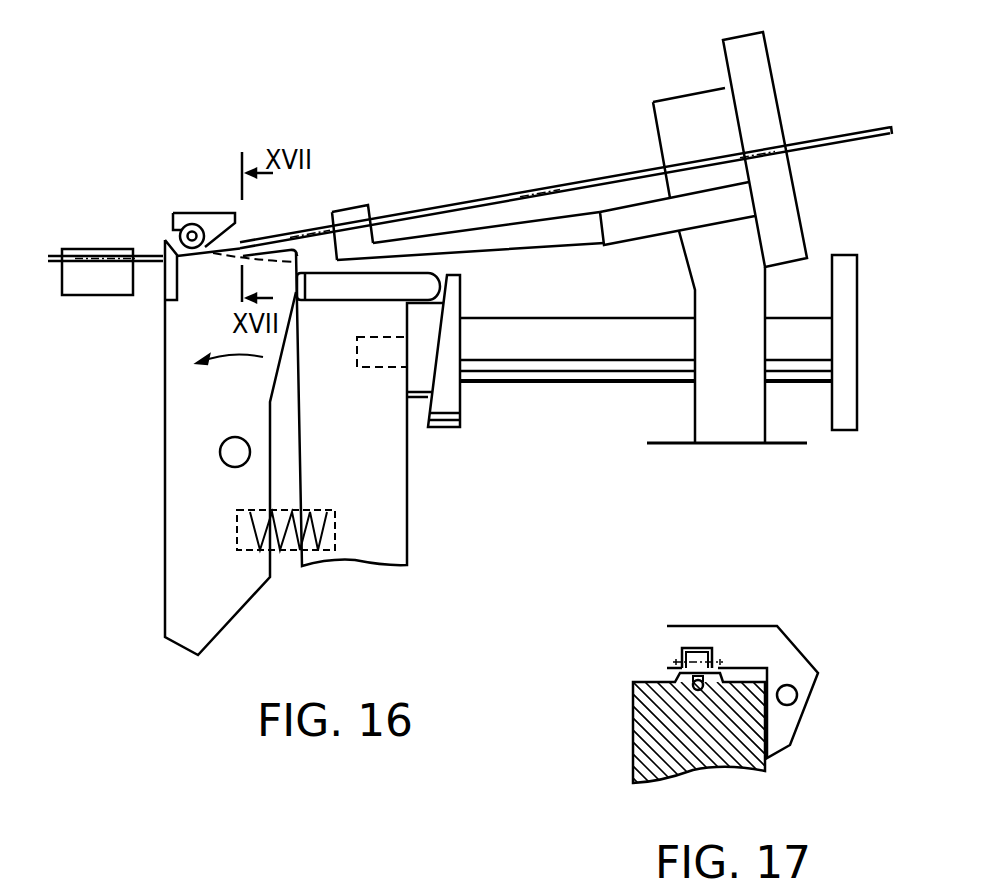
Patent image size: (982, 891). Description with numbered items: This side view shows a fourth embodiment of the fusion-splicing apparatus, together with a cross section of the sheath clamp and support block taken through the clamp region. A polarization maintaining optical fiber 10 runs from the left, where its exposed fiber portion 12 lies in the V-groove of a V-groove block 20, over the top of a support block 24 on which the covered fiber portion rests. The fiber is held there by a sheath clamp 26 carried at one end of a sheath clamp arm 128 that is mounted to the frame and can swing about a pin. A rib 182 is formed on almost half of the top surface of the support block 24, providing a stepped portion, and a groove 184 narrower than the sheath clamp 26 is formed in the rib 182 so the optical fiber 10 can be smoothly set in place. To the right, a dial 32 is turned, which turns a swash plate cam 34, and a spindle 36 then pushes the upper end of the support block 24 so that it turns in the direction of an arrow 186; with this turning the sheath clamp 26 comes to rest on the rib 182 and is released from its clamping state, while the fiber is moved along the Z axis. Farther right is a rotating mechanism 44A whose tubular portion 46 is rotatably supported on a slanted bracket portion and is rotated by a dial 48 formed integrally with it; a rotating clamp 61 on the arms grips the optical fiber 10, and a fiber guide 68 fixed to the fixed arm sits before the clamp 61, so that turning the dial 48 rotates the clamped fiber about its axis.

In FIG. 16, the polarization maintaining optical fiber 10 is at (575, 183).
In FIG. 17, the polarization maintaining optical fiber 10 is at (700, 681).
In FIG. 16, the exposed fiber portion 12 is at (80, 256).
In FIG. 16, the V-groove block 20 is at (115, 288).
In FIG. 16, the support block 24 is at (175, 393).
In FIG. 17, the support block 24 is at (648, 703).
In FIG. 16, the sheath clamp 26 is at (172, 222).
In FIG. 17, the sheath clamp 26 is at (682, 650).
In FIG. 16, the dial 32 is at (850, 287).
In FIG. 16, the swash plate cam 34 is at (453, 393).
In FIG. 16, the spindle 36 is at (335, 297).
In FIG. 16, the rotating mechanism 44A is at (694, 30).
In FIG. 16, the tubular portion 46 is at (682, 110).
In FIG. 16, the dial 48 is at (762, 72).
In FIG. 16, the rotating clamp 61 is at (348, 218).
In FIG. 16, the fiber guide 68 is at (403, 221).
In FIG. 16, the sheath clamp arm 128 is at (211, 216).
In FIG. 17, the sheath clamp arm 128 is at (728, 637).
In FIG. 16, the rib 182 is at (253, 247).
In FIG. 17, the rib 182 is at (715, 657).
In FIG. 17, the groove 184 is at (692, 683).
In FIG. 16, the arrow 186 is at (233, 356).